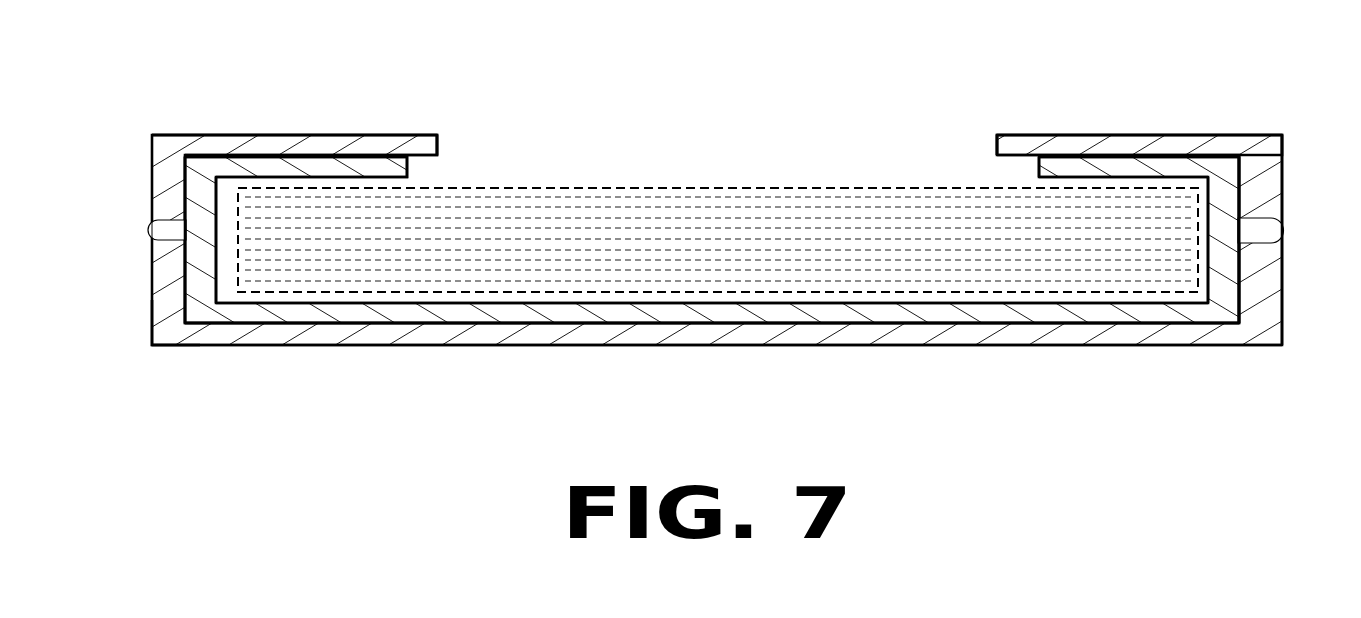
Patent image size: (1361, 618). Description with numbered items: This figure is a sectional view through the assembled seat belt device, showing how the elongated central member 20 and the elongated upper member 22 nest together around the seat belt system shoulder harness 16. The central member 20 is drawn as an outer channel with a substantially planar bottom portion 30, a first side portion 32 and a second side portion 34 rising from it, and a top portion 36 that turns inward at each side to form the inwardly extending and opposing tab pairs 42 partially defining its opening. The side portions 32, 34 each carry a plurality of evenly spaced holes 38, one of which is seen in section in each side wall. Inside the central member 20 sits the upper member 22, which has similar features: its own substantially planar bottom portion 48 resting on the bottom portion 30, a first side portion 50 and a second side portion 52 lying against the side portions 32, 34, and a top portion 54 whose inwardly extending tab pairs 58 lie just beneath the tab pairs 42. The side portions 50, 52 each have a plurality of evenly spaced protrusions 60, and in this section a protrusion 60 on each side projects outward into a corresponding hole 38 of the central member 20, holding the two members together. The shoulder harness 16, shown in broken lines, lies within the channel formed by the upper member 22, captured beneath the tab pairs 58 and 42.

The seat belt system shoulder harness 16 is at (683, 187).
The elongated central member 20 is at (157, 133).
The elongated upper member 22 is at (153, 345).
The substantially planar bottom portion 30 is at (270, 345).
The first side portion 32 is at (153, 262).
The second side portion 34 is at (1282, 300).
The top portion 36 is at (205, 133).
The holes 38 is at (170, 218).
The tab pairs 42 is at (438, 135).
The substantially planar bottom portion 48 is at (1040, 315).
The first side portion 50 is at (205, 293).
The second side portion 52 is at (1225, 270).
The top portion 54 is at (308, 150).
The tab pairs 58 is at (365, 160).
The protrusions 60 is at (150, 229).